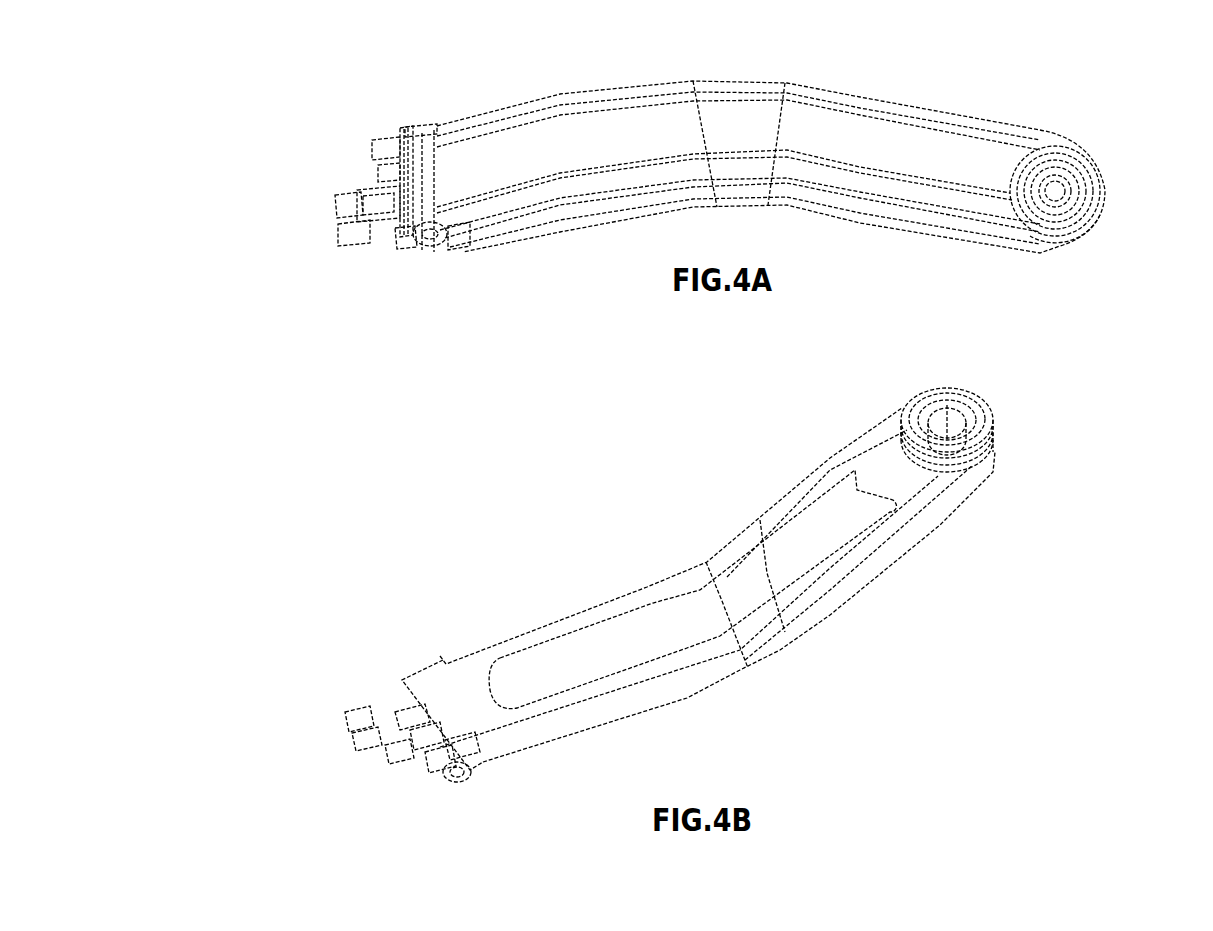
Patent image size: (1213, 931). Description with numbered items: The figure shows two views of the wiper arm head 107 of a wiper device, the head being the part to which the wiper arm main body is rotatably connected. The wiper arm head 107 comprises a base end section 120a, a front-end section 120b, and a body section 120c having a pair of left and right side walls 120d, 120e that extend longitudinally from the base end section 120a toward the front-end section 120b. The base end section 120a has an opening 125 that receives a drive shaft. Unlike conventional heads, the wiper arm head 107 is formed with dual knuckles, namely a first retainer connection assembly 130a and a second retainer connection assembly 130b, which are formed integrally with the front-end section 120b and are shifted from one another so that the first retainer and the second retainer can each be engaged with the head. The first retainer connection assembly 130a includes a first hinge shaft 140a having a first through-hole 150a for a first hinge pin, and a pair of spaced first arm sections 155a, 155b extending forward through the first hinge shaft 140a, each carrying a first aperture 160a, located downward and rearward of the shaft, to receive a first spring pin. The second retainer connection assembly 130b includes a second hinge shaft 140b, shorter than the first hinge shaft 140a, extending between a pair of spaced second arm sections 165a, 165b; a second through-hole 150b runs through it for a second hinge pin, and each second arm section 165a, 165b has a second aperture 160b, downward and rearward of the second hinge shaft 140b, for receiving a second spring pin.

In FIG. 4A, the wiper arm head 107 is at (1115, 178).
In FIG. 4B, the wiper arm head 107 is at (1015, 437).
In FIG. 4A, the base end section 120a is at (1075, 227).
In FIG. 4A, the front-end section 120b is at (460, 237).
In FIG. 4A, the body section 120c is at (895, 147).
In FIG. 4B, the left side wall 120d is at (722, 558).
In FIG. 4B, the right side wall 120e is at (877, 548).
In FIG. 4A, the opening 125 is at (1070, 190).
In FIG. 4A, the first retainer connection assembly 130a is at (448, 240).
In FIG. 4A, the second retainer connection assembly 130b is at (402, 240).
In FIG. 4A, the first hinge shaft 140a is at (413, 175).
In FIG. 4A, the second hinge shaft 140b is at (378, 198).
In FIG. 4B, the first through-hole 150a is at (458, 773).
In FIG. 4B, the second through-hole 150b is at (395, 748).
In FIG. 4B, the first arm section 155a is at (437, 762).
In FIG. 4B, the first arm section 155b is at (425, 738).
In FIG. 4B, the first aperture 160a is at (460, 752).
In FIG. 4B, the second aperture 160b is at (412, 728).
In FIG. 4A, the second arm section 165a is at (355, 232).
In FIG. 4B, the second arm section 165a is at (370, 735).
In FIG. 4A, the second arm section 165b is at (337, 205).
In FIG. 4B, the second arm section 165b is at (357, 718).